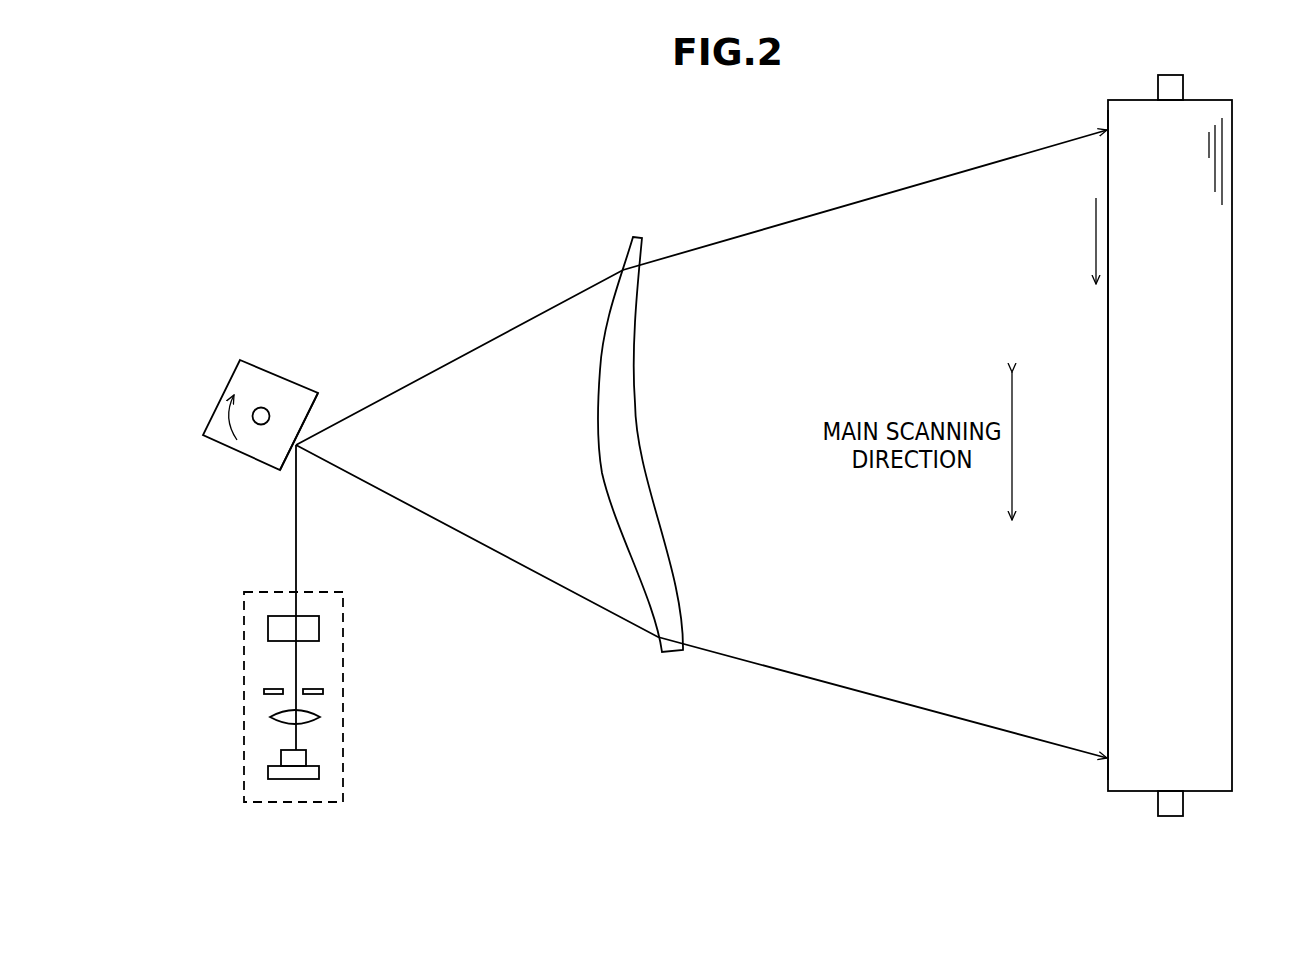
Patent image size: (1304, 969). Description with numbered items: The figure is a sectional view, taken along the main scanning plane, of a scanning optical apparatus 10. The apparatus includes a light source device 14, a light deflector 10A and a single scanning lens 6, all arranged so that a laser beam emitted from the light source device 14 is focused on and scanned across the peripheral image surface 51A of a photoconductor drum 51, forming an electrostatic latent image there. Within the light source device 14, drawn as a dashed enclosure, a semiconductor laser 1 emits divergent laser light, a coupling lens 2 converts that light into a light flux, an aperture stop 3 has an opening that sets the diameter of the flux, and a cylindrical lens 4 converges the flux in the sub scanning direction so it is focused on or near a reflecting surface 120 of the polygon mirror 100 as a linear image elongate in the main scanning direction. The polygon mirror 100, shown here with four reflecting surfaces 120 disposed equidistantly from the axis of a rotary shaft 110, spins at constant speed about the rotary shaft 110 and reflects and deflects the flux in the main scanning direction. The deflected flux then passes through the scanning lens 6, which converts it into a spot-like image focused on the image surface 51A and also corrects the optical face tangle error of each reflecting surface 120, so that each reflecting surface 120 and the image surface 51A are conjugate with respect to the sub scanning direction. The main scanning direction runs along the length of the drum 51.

The scanning optical apparatus 10 is at (369, 166).
The light deflector 10A is at (212, 324).
The polygon mirror 100 is at (274, 372).
The rotary shaft 110 is at (262, 425).
The reflecting surface 120 is at (310, 420).
The light source device 14 is at (243, 687).
The semiconductor laser 1 is at (319, 771).
The coupling lens 2 is at (318, 718).
The aperture stop 3 is at (323, 692).
The cylindrical lens 4 is at (319, 628).
The scanning lens 6 is at (673, 654).
The photoconductor drum 51 is at (1205, 290).
The image surface 51A is at (1107, 177).